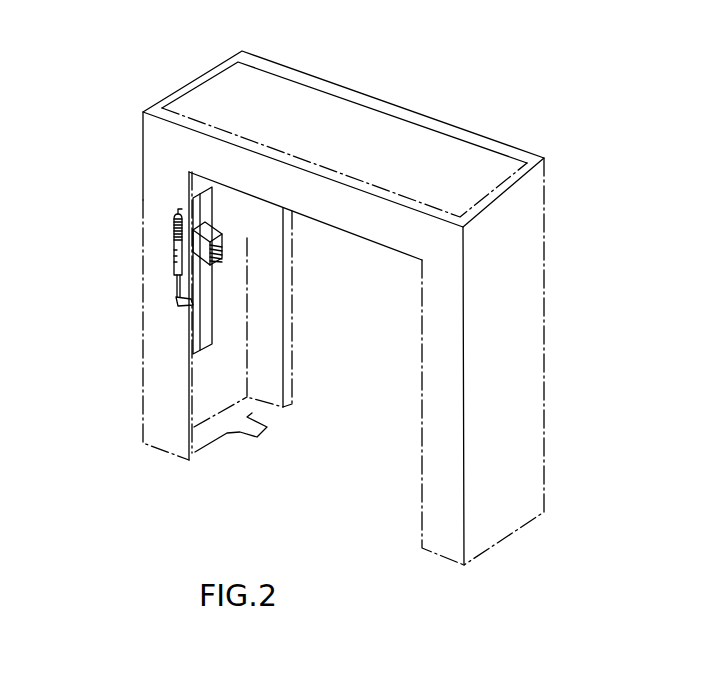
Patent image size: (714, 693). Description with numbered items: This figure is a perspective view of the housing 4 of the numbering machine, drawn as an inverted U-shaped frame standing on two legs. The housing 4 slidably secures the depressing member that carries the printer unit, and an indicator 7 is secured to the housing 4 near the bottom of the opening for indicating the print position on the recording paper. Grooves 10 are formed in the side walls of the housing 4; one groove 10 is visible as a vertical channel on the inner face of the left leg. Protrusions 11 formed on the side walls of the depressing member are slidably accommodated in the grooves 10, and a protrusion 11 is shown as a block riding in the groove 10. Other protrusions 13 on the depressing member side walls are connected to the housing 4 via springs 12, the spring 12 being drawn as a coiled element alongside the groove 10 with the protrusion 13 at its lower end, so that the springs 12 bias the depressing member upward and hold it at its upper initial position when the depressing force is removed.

The housing 4 is at (553, 290).
The indicator 7 is at (243, 431).
The grooves 10 is at (189, 195).
The protrusions 11 is at (208, 256).
The springs 12 is at (173, 245).
The other protrusions 13 is at (180, 307).